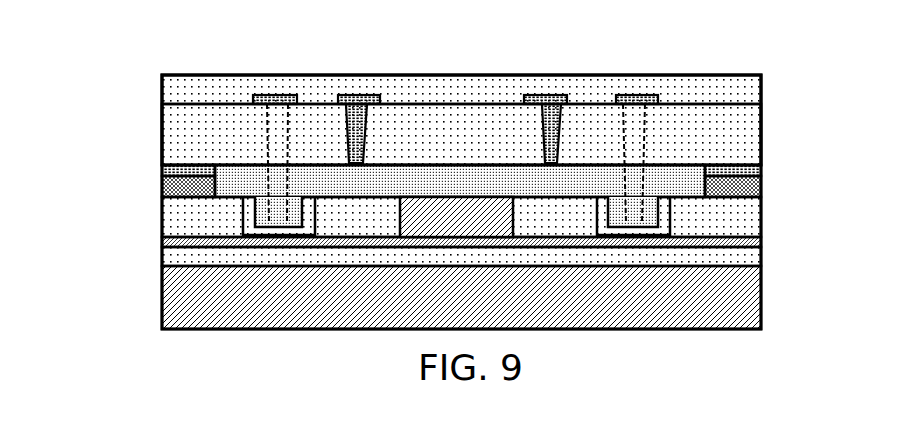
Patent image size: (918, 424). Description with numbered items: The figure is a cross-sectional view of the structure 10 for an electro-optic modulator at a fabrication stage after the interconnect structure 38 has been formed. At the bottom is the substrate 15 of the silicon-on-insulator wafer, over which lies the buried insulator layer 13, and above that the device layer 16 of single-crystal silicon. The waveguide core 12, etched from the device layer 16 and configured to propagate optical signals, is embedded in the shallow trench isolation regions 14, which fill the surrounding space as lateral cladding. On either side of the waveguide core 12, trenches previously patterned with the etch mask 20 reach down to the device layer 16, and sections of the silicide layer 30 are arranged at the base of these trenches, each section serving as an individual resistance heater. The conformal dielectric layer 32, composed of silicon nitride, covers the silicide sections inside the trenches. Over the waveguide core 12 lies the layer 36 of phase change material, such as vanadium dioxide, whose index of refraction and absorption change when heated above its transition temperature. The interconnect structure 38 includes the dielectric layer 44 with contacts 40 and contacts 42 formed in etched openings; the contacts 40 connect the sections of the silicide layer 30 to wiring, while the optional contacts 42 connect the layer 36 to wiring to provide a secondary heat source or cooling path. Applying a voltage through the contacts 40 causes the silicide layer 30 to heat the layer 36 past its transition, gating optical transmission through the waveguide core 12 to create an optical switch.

The structure 10 is at (130, 117).
The waveguide core 12 is at (465, 215).
The buried insulator layer 13 is at (735, 261).
The shallow trench isolation regions 14 is at (733, 219).
The substrate 15 is at (167, 305).
The device layer 16 is at (183, 243).
The etch mask 20 is at (177, 185).
The silicide layer 30 is at (270, 232).
The conformal dielectric layer 32 is at (737, 169).
The layer 36 is at (505, 187).
The interconnect structure 38 is at (764, 128).
The contacts 40 is at (288, 165).
The contacts 42 is at (358, 106).
The dielectric layer 44 is at (175, 138).